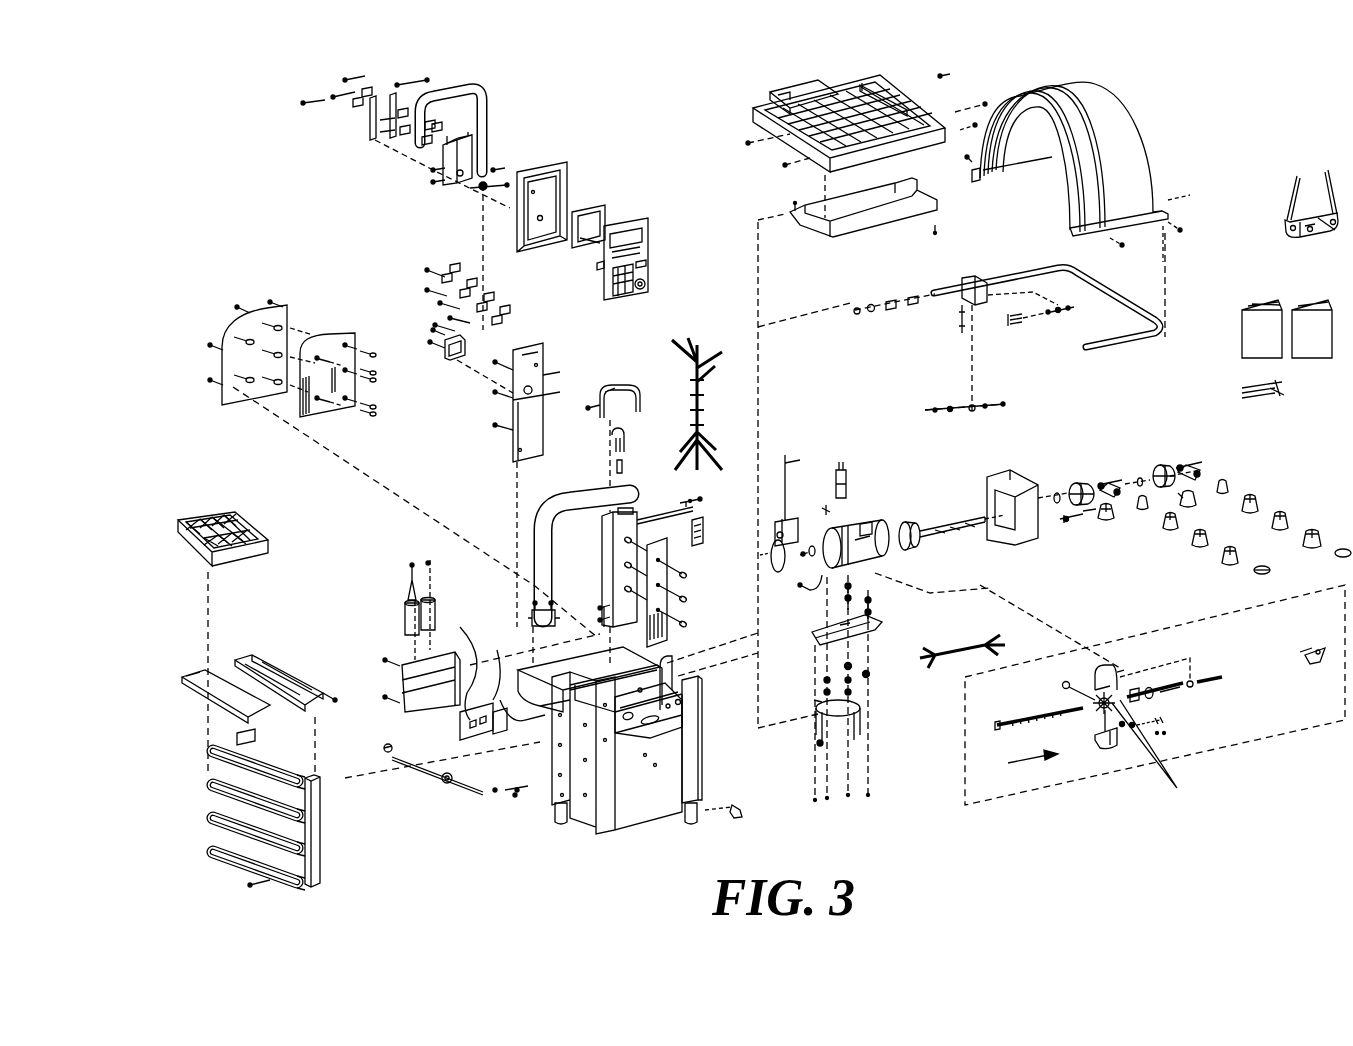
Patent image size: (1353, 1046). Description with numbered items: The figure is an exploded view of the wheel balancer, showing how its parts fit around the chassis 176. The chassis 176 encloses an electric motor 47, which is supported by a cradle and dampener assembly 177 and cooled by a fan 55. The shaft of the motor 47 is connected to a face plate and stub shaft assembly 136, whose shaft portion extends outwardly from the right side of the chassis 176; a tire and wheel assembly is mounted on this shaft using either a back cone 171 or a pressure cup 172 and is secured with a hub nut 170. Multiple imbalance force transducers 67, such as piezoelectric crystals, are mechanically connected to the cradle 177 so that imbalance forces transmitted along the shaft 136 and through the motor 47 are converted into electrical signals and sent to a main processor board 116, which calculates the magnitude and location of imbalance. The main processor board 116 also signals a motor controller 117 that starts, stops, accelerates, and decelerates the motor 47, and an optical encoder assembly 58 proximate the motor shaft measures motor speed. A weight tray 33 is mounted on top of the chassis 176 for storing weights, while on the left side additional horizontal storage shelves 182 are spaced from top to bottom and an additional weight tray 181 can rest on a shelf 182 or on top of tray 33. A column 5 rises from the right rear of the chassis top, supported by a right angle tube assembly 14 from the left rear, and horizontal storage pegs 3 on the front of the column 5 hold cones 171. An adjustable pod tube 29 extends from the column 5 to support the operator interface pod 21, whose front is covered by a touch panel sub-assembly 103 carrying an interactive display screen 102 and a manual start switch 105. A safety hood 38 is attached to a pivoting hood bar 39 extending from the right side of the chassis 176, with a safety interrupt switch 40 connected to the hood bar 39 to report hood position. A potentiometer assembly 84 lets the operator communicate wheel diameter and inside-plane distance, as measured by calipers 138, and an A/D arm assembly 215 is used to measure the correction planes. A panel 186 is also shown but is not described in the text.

The horizontal storage pegs 3 is at (685, 574).
The column 5 is at (602, 556).
The right angle tube assembly 14 is at (568, 503).
The operator interface pod 21 is at (562, 167).
The adjustable pod tube 29 is at (466, 88).
The weight tray 33 is at (808, 96).
The safety hood 38 is at (1128, 108).
The pivoting hood bar 39 is at (1128, 307).
The safety interrupt switch 40 is at (1013, 322).
The electric motor 47 is at (872, 557).
The fan 55 is at (790, 517).
The optical encoder assembly 58 is at (838, 518).
The imbalance force transducers 67 is at (849, 665).
The potentiometer assembly 84 is at (1158, 758).
The interactive display screen 102 is at (583, 253).
The touch panel sub-assembly 103 is at (647, 226).
The manual start switch 105 is at (649, 282).
The main processor board 116 is at (466, 745).
The motor controller 117 is at (453, 641).
The face plate and stub shaft assembly 136 is at (924, 543).
The calipers 138 is at (1327, 172).
The hub nut 170 is at (1188, 463).
The back cone 171 is at (1198, 498).
The pressure cup 172 is at (1159, 465).
The chassis 176 is at (705, 766).
The cradle and dampener assembly 177 is at (813, 633).
The additional weight tray 181 is at (237, 540).
The horizontal storage shelves 182 is at (322, 868).
The panel 186 is at (343, 336).
The A/D arm assembly 215 is at (1265, 737).